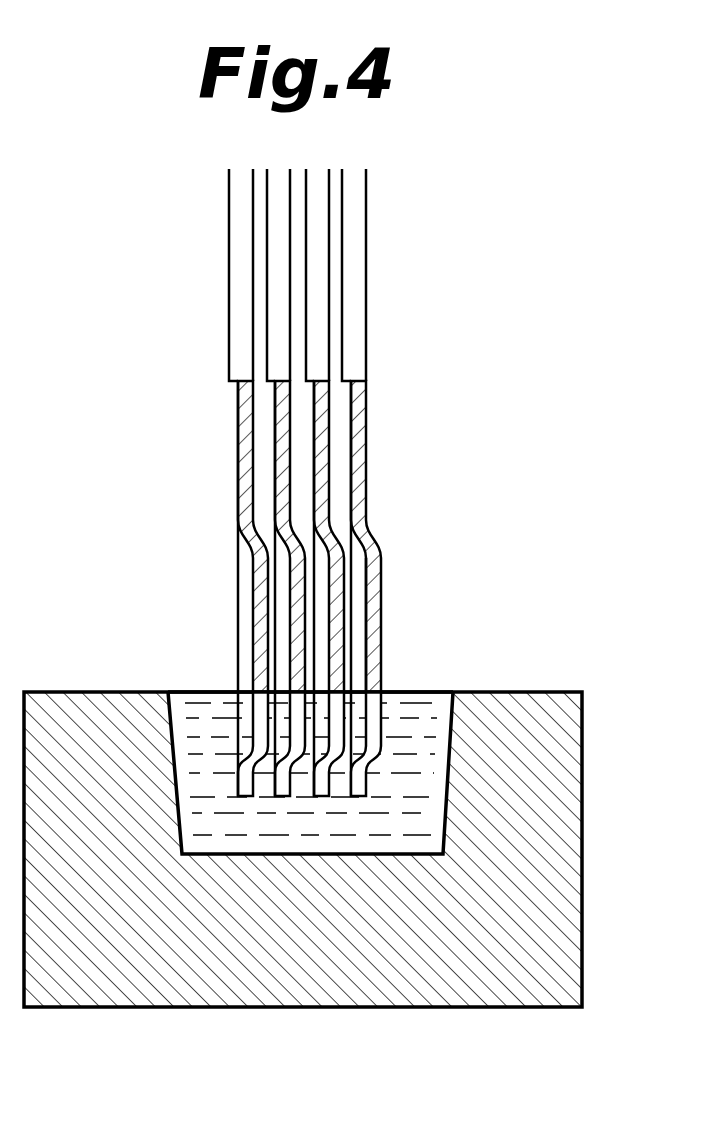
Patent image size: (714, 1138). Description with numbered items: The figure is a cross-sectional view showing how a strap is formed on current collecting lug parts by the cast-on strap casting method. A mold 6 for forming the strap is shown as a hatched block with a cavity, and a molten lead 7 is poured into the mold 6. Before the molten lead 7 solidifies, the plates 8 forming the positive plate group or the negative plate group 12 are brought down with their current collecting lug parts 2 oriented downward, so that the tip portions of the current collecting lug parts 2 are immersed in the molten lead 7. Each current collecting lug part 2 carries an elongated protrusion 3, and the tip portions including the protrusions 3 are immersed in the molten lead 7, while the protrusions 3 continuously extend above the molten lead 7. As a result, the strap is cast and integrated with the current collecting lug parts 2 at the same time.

The plate group 12 is at (296, 482).
The plate 8 is at (367, 277).
The current collecting lug part 2 is at (367, 447).
The protrusion 3 is at (381, 577).
The molten lead 7 is at (408, 712).
The mold 6 is at (562, 752).